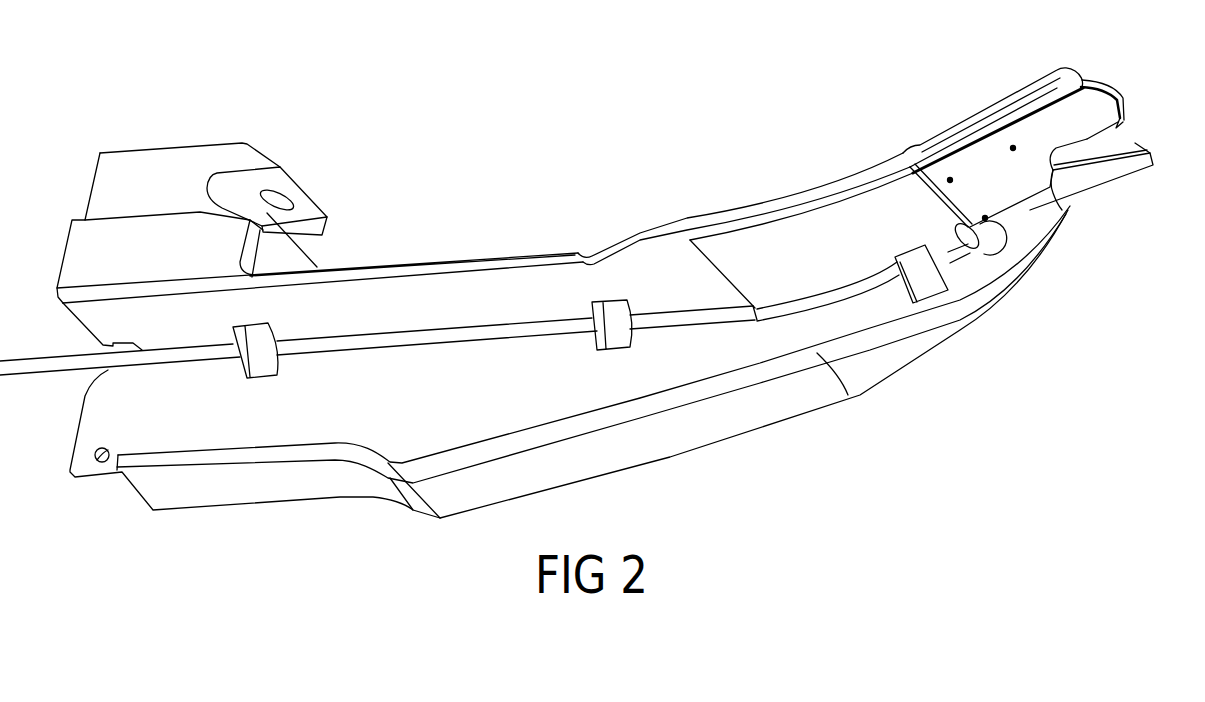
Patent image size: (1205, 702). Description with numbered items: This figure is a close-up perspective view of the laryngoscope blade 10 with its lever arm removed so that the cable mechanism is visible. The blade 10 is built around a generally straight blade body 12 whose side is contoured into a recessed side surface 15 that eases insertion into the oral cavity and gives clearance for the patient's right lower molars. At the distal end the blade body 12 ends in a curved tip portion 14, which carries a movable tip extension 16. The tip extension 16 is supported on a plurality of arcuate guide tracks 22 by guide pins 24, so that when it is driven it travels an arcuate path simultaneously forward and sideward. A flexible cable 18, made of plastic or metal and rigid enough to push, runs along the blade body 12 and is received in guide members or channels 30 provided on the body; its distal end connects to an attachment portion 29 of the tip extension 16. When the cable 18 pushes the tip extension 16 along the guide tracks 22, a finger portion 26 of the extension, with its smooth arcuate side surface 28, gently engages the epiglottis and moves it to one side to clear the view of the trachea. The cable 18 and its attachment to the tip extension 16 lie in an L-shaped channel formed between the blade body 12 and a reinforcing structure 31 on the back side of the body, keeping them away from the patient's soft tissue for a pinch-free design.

The laryngoscope blade 10 is at (441, 146).
The blade body 12 is at (670, 210).
The tip portion 14 is at (1080, 72).
The recessed side surface 15 is at (535, 251).
The movable tip extension 16 is at (1033, 110).
The flexible cable 18 is at (693, 320).
The arcuate guide tracks 22 is at (1110, 120).
The guide pins 24 is at (985, 216).
The finger portion 26 is at (1118, 122).
The smooth arcuate side surface 28 is at (1088, 137).
The attachment portion 29 is at (1000, 244).
The guide members or channels 30 is at (258, 365).
The reinforcing structure 31 is at (403, 440).